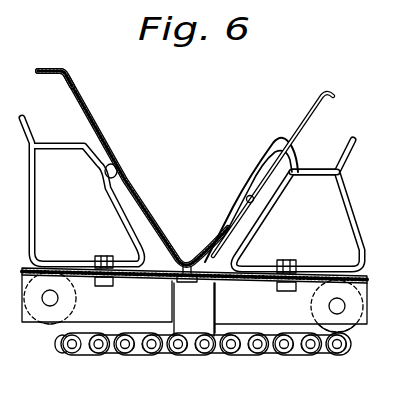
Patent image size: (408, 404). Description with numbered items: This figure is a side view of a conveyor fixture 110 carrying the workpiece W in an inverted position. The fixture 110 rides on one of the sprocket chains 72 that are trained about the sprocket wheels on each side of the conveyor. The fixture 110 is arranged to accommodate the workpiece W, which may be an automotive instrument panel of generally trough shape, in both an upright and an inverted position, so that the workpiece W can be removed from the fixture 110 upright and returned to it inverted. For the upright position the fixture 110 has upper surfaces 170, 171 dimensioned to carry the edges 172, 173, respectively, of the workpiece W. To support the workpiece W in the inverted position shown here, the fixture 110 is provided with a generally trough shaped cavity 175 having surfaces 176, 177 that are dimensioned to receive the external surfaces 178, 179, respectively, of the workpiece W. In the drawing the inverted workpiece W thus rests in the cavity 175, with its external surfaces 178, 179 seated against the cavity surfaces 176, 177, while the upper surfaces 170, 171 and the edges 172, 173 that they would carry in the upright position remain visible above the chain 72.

The edge of workpiece 172 is at (50, 69).
The upper surface of fixture 171 is at (83, 144).
The workpiece W is at (118, 170).
The external surface of workpiece 179 is at (128, 184).
The surface of cavity 177 is at (133, 208).
The external surface of workpiece 178 is at (294, 133).
The edge of workpiece 173 is at (323, 99).
The upper surface of fixture 170 is at (315, 168).
The conveyor fixture 110 is at (352, 210).
The surface of cavity 176 is at (252, 201).
The trough shaped cavity 175 is at (215, 266).
The sprocket chain 72 is at (246, 356).